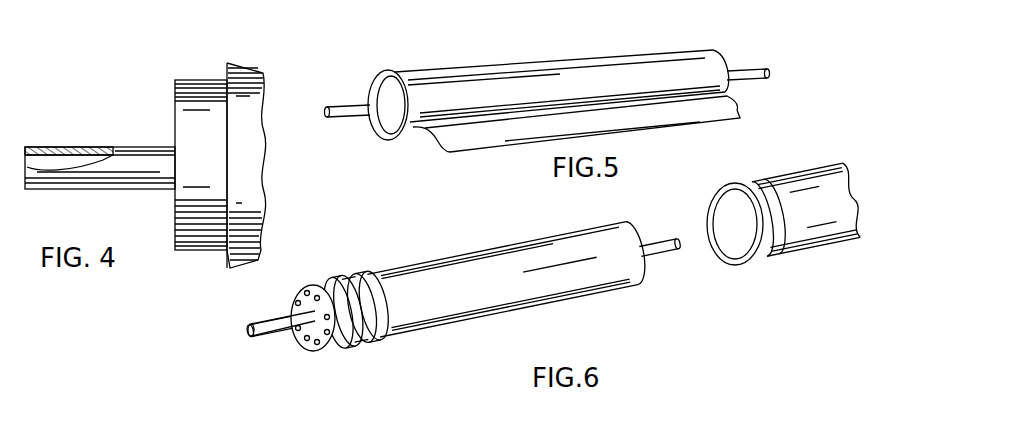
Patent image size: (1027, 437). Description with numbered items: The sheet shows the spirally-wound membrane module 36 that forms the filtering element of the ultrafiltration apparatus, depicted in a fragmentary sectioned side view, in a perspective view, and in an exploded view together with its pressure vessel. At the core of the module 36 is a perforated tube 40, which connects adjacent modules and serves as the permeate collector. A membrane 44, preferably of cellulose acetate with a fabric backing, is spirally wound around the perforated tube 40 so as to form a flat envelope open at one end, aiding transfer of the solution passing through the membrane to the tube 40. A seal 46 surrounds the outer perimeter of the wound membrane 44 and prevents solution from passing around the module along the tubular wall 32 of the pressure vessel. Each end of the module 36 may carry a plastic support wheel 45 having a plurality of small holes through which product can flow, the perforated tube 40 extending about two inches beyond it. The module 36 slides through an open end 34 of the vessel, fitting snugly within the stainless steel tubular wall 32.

In FIG. 6, the tubular wall 32 is at (822, 250).
In FIG. 6, the open end 34 is at (727, 192).
In FIG. 4, the spirally-wound membrane module 36 is at (162, 203).
In FIG. 5, the spirally-wound membrane module 36 is at (588, 50).
In FIG. 6, the spirally-wound membrane module 36 is at (893, 257).
In FIG. 4, the perforated tube 40 is at (136, 156).
In FIG. 5, the perforated tube 40 is at (350, 103).
In FIG. 4, the membrane 44 is at (212, 155).
In FIG. 5, the membrane 44 is at (737, 110).
In FIG. 6, the support wheel 45 is at (313, 352).
In FIG. 4, the seal 46 is at (243, 92).